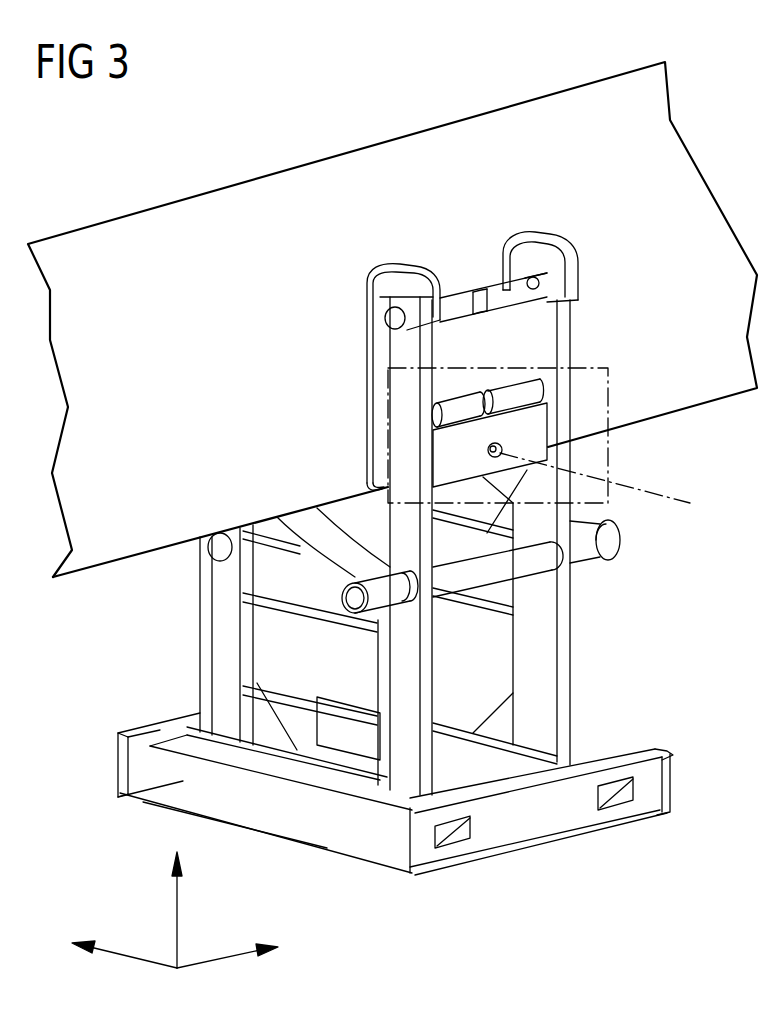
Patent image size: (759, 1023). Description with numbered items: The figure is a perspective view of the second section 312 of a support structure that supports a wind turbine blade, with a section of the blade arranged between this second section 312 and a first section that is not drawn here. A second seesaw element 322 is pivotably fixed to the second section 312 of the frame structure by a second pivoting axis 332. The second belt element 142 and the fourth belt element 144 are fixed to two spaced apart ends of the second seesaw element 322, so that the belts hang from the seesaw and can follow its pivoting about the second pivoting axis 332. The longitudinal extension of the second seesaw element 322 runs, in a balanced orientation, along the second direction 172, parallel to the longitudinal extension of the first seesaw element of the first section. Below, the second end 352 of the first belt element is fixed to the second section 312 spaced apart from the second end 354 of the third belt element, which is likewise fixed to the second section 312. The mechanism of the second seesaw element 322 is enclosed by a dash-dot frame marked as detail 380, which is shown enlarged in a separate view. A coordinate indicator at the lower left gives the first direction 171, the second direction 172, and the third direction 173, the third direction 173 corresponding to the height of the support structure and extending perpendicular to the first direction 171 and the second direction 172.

The second belt element 142 is at (462, 300).
The fourth belt element 144 is at (503, 292).
The second section 312 is at (557, 870).
The second seesaw element 322 is at (537, 488).
The second pivoting axis 332 is at (680, 497).
The second end of the first belt element 352 is at (407, 598).
The second end of the third belt element 354 is at (597, 540).
The detail 380 is at (590, 368).
The first direction 171 is at (132, 958).
The second direction 172 is at (215, 961).
The third direction 173 is at (177, 917).